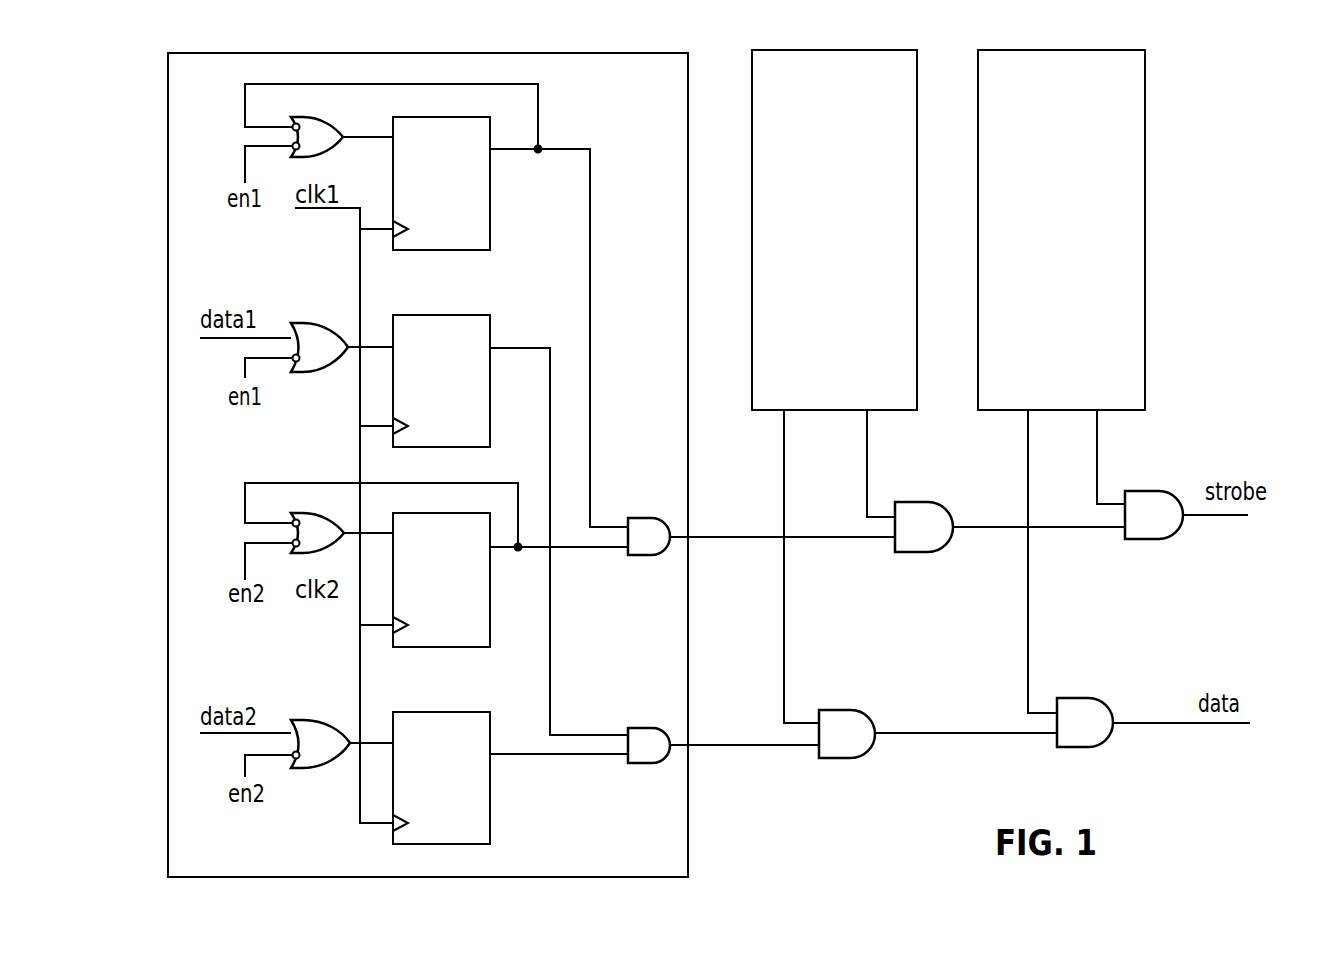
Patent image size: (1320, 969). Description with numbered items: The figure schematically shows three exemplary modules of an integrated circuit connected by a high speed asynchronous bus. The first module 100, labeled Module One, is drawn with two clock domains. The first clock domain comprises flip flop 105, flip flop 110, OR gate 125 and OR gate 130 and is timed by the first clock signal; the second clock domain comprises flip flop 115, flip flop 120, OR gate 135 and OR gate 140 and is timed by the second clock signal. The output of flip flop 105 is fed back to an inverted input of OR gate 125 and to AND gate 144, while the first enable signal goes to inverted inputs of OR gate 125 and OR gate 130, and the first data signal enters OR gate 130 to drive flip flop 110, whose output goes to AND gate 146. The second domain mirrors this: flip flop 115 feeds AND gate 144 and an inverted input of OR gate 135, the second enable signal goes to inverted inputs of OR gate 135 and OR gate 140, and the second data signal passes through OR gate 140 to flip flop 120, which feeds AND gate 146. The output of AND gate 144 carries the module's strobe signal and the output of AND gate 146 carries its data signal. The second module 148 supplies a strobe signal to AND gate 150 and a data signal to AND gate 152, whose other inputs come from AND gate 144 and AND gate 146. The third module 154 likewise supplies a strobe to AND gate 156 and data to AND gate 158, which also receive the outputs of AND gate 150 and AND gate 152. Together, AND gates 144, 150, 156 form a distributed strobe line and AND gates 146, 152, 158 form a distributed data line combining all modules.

The first module 100 is at (612, 857).
The flip flop 105 is at (458, 213).
The flip flop 110 is at (458, 410).
The flip flop 115 is at (458, 610).
The flip flop 120 is at (458, 806).
The OR gate 125 is at (318, 128).
The OR gate 130 is at (311, 330).
The OR gate 135 is at (320, 525).
The OR gate 140 is at (311, 727).
The AND gate 144 is at (642, 527).
The AND gate 146 is at (644, 735).
The second module 148 is at (851, 155).
The AND gate 150 is at (920, 510).
The AND gate 152 is at (845, 715).
The third module 154 is at (1077, 155).
The AND gate 156 is at (1147, 500).
The AND gate 158 is at (1078, 706).